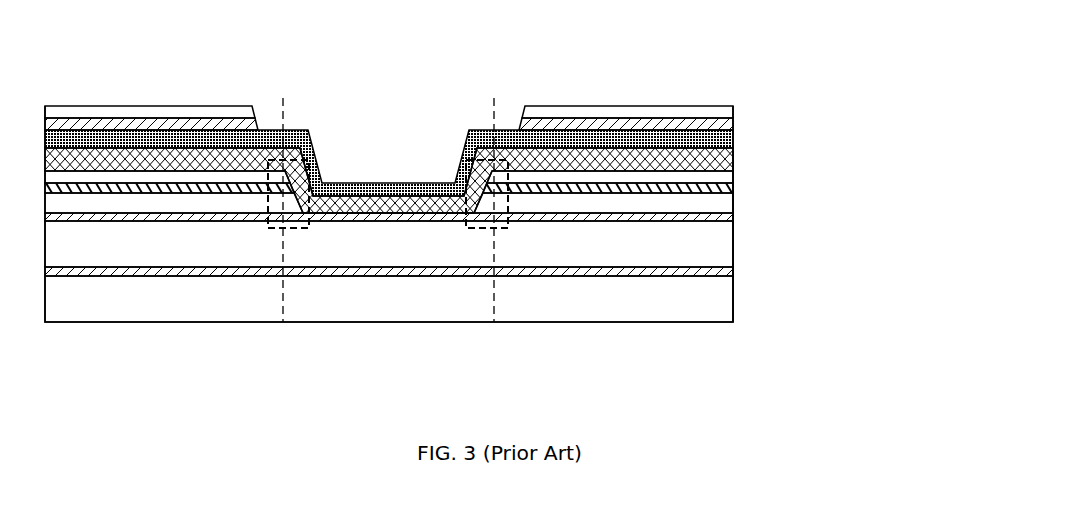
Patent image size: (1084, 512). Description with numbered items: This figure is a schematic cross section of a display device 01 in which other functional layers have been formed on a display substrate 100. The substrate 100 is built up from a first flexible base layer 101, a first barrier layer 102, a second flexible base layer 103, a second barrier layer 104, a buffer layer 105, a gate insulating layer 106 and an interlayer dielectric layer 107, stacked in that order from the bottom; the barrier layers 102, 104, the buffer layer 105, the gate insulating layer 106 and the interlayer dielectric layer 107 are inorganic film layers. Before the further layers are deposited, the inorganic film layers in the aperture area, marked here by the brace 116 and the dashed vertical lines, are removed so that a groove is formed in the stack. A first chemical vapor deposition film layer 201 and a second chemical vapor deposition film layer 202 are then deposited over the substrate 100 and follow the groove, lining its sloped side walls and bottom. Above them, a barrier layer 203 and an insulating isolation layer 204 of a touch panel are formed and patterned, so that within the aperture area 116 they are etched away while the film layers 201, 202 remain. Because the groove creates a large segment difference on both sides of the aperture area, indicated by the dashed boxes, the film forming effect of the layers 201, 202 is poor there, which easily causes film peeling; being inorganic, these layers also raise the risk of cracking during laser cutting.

The display device 01 is at (405, 407).
The display substrate 100 is at (806, 150).
The first flexible base layer 101 is at (733, 297).
The first barrier layer 102 is at (733, 270).
The second flexible base layer 103 is at (733, 242).
The second barrier layer 104 is at (733, 216).
The buffer layer 105 is at (733, 203).
The gate insulating layer 106 is at (735, 189).
The interlayer dielectric layer 107 is at (733, 177).
The opening region 116 is at (282, 83).
The first chemical vapor deposition film layer 201 is at (733, 158).
The second chemical vapor deposition film layer 202 is at (733, 140).
The barrier layer 203 is at (733, 118).
The insulating isolation layer 204 is at (733, 106).